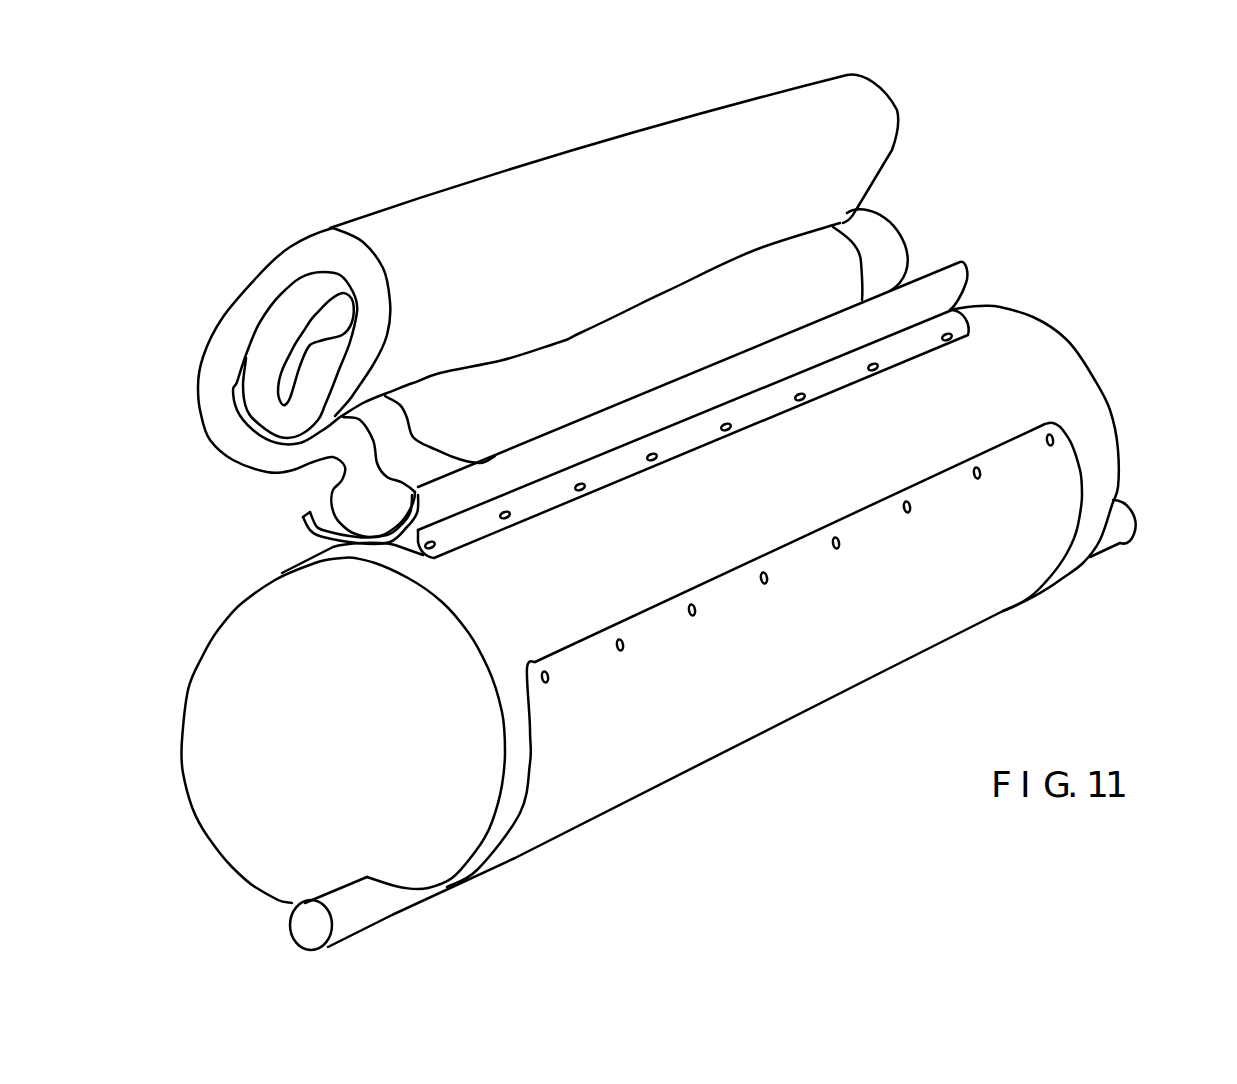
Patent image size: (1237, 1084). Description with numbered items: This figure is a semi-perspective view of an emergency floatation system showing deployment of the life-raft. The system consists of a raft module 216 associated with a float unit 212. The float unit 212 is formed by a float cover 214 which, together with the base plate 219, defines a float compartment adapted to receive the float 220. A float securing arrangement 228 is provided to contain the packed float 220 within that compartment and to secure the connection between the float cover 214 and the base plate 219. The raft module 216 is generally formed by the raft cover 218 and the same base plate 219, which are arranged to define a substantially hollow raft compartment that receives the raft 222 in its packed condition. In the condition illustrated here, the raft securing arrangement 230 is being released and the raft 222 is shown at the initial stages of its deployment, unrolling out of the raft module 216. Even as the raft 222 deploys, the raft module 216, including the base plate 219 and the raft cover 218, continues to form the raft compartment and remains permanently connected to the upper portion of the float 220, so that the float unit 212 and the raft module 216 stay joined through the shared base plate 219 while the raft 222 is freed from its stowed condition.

The float unit 212 is at (1108, 318).
The float cover 214 is at (735, 710).
The raft module 216 is at (390, 192).
The raft cover 218 is at (538, 473).
The base plate 219 is at (762, 407).
The float 220 is at (1077, 405).
The raft 222 is at (658, 153).
The float securing arrangement 228 is at (946, 342).
The raft securing arrangement 230 is at (330, 513).